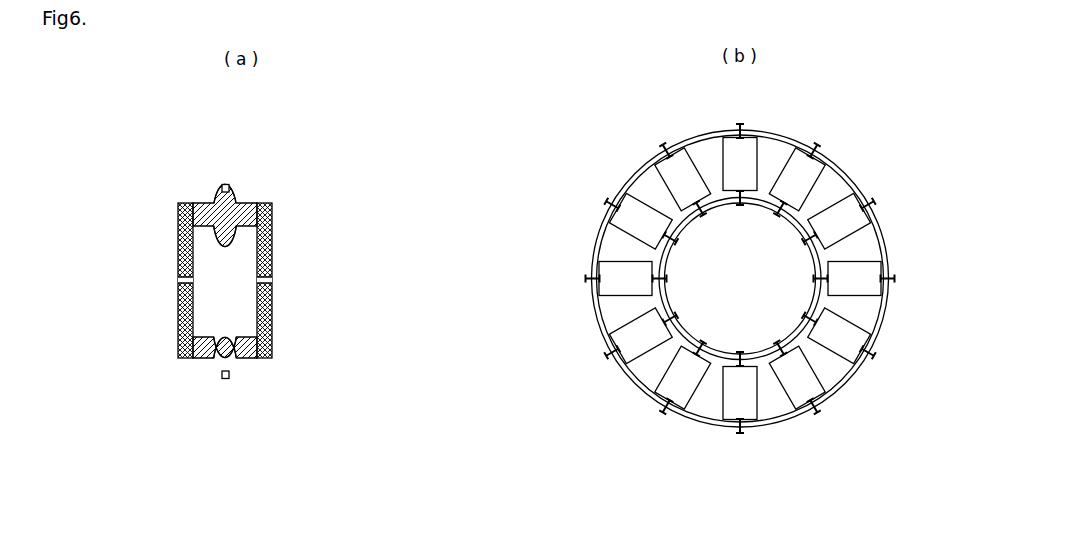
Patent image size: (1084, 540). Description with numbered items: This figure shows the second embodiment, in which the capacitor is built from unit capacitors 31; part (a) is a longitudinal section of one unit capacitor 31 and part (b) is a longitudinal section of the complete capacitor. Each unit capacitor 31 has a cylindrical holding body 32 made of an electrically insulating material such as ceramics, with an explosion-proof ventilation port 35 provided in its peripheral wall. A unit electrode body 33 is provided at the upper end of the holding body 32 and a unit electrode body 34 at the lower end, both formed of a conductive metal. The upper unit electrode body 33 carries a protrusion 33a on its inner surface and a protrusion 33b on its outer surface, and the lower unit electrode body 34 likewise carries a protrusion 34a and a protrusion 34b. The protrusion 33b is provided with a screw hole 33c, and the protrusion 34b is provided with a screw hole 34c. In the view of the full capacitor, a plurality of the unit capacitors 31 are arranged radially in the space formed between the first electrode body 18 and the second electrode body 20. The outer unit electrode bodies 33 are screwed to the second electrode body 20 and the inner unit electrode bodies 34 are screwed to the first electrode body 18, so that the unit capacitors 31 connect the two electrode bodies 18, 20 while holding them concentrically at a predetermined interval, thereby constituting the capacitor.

The first electrode body 18 is at (668, 297).
The second electrode body 20 is at (634, 384).
The unit capacitor 31 is at (508, 307).
The holding body 32 is at (272, 238).
The unit electrode body 33 is at (233, 198).
The protrusion 33a is at (228, 246).
The protrusion 33b is at (215, 198).
The screw hole 33c is at (225, 185).
The unit electrode body 34 is at (214, 356).
The protrusion 34a is at (217, 322).
The protrusion 34b is at (240, 365).
The screw hole 34c is at (225, 380).
The explosion-proof ventilation port 35 is at (178, 280).